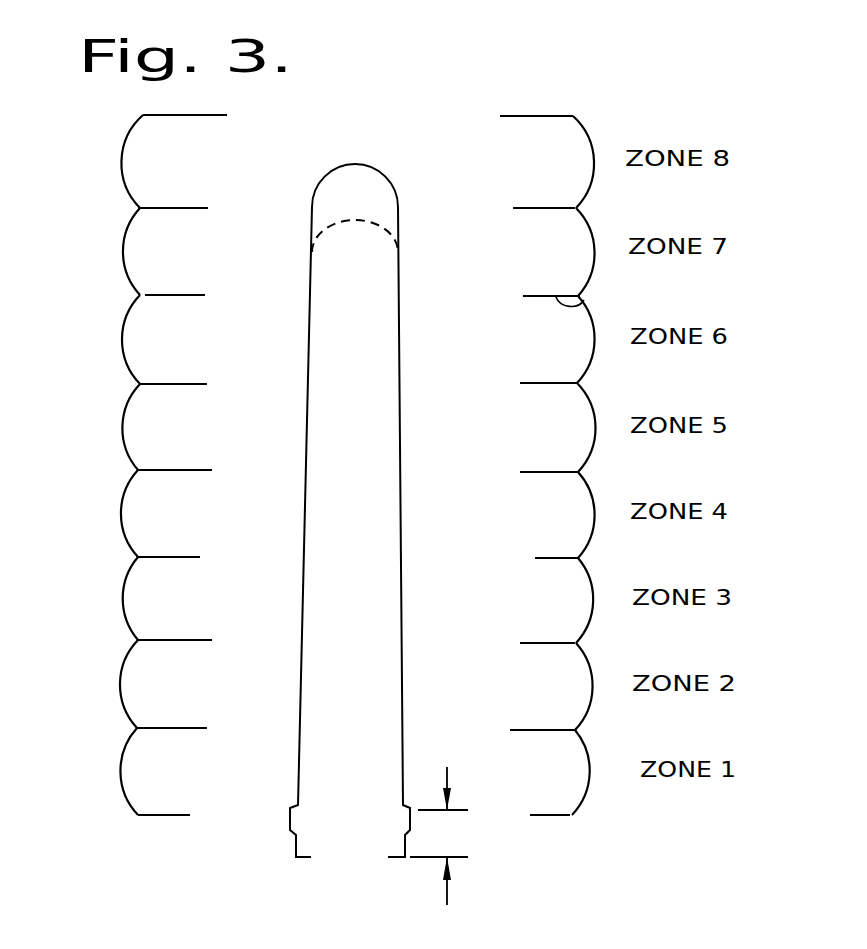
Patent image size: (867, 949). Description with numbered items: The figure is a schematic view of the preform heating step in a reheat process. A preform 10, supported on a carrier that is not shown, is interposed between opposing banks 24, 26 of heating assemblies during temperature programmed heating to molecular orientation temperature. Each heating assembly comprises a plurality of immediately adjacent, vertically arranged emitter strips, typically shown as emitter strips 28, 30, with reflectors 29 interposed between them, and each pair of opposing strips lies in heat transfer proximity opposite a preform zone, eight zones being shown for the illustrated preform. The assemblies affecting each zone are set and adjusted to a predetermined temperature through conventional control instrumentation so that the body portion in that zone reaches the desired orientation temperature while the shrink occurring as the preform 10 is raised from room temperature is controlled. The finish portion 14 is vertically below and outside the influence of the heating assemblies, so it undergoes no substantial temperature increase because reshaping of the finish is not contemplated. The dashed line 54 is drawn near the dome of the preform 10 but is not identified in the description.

The preform 10 is at (422, 526).
The finish portion 14 is at (439, 836).
The bank of heating assemblies 24 is at (573, 440).
The bank of heating assemblies 26 is at (136, 457).
The emitter strip 28 is at (592, 236).
The reflector 29 is at (584, 300).
The emitter strip 30 is at (126, 264).
The dome reference line 54 is at (398, 222).